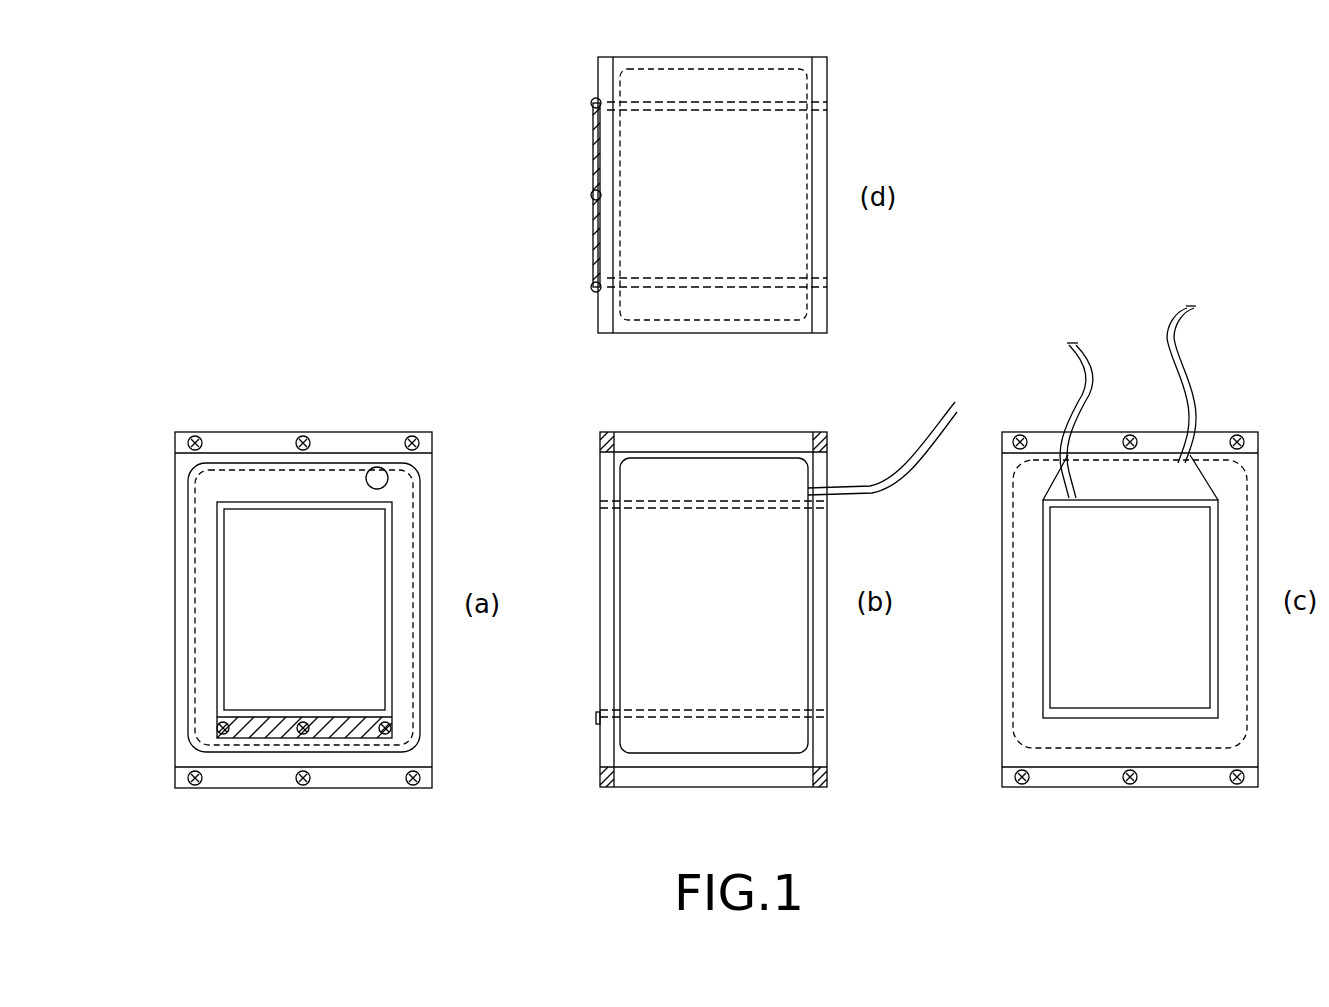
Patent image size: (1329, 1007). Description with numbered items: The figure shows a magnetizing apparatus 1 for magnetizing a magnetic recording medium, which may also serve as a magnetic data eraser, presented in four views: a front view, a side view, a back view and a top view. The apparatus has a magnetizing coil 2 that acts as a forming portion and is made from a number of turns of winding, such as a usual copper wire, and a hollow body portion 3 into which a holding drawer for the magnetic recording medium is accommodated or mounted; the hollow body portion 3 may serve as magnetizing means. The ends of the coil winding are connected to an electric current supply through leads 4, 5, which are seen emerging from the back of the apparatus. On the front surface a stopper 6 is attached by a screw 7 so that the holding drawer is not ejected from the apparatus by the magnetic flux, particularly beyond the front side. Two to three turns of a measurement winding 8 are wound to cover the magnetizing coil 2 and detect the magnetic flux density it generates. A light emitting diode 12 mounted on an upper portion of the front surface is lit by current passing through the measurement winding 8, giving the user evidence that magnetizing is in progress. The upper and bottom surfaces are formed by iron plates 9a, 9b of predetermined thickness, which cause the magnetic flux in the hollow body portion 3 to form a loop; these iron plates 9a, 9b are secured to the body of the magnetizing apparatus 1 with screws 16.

The magnetizing apparatus 1 is at (400, 434).
The magnetizing coil 2 is at (232, 480).
The hollow body portion 3 is at (243, 568).
The lead 4 is at (870, 490).
The lead 5 is at (1182, 338).
The stopper 6 is at (255, 730).
The screw 7 is at (382, 712).
The measurement winding 8 is at (418, 462).
The iron plate 9a is at (268, 440).
The iron plate 9b is at (232, 782).
The light emitting diode 12 is at (370, 470).
The screws 16 is at (197, 438).